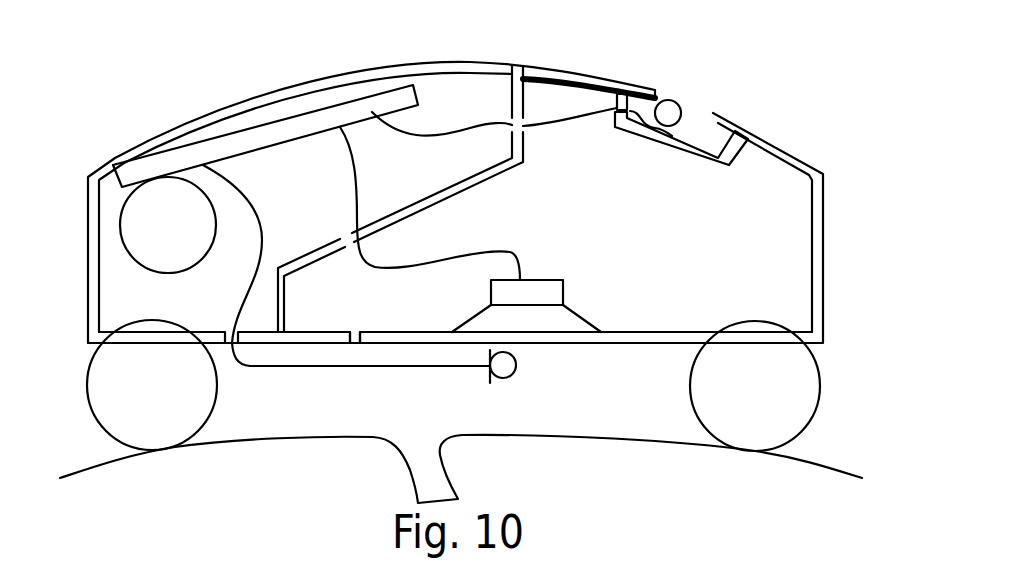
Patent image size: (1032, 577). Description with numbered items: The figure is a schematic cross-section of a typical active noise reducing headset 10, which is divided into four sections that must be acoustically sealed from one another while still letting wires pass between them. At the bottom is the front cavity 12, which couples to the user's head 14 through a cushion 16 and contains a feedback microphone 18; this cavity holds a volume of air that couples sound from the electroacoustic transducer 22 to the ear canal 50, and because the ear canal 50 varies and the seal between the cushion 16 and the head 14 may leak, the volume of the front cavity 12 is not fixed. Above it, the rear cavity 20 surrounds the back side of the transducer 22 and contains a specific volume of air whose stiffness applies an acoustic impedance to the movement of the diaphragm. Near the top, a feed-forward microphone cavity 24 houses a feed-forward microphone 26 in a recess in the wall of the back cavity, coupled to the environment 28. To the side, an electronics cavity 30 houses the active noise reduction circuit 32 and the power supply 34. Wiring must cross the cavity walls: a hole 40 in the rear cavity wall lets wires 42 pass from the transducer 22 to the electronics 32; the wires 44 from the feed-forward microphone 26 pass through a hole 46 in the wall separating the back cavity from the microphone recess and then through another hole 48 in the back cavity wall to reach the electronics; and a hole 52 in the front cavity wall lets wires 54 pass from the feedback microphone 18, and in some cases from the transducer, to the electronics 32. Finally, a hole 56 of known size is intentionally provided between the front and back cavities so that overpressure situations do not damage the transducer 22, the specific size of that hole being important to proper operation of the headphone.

The active noise reducing headset 10 is at (143, 97).
The front cavity 12 is at (242, 418).
The user's head 14 is at (289, 478).
The cushion 16 is at (822, 433).
The feedback microphone 18 is at (497, 379).
The rear cavity 20 is at (577, 225).
The electroacoustic transducer 22 is at (563, 284).
The feed-forward microphone cavity 24 is at (691, 113).
The feed-forward microphone 26 is at (672, 100).
The environment 28 is at (729, 45).
The electronics cavity 30 is at (384, 175).
The active noise reduction circuit 32 is at (300, 142).
The power supply 34 is at (152, 243).
The hole 40 is at (370, 244).
The wires 42 is at (450, 258).
The wires 44 is at (556, 125).
The hole 46 is at (602, 114).
The hole 48 is at (497, 121).
The ear canal 50 is at (420, 462).
The hole 52 is at (223, 315).
The wires 54 is at (328, 367).
The hole 56 is at (354, 315).